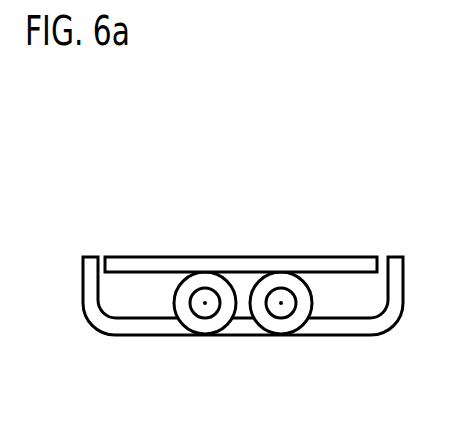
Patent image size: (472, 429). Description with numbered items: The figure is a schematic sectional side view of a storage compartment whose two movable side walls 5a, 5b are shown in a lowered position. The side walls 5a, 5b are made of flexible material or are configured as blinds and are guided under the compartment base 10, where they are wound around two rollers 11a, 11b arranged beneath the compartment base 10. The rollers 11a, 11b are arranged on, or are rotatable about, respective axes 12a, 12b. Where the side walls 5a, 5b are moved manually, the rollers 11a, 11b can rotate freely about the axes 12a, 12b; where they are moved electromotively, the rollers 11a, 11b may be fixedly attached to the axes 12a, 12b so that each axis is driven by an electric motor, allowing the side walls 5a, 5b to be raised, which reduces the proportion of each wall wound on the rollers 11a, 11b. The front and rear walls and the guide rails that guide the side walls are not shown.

The compartment base 10 is at (160, 258).
The roller 11a is at (281, 300).
The roller 11b is at (205, 300).
The axis 12a is at (283, 303).
The axis 12b is at (203, 303).
The side wall 5a is at (333, 328).
The side wall 5b is at (149, 329).